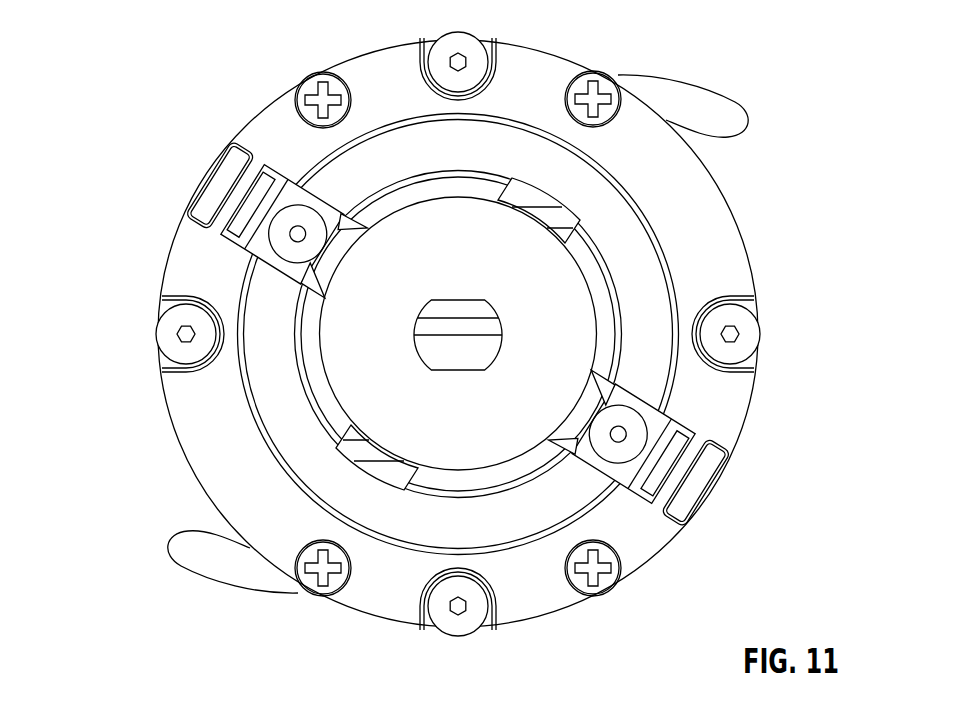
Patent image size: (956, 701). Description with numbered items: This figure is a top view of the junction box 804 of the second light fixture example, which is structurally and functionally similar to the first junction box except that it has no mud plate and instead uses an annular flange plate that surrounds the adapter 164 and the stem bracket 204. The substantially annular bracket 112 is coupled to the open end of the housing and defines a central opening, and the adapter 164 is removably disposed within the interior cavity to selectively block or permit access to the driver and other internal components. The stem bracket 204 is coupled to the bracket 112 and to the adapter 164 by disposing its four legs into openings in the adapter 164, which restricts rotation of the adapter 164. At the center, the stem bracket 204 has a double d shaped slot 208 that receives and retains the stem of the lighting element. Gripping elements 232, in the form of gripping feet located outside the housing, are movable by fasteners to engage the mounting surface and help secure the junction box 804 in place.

The junction box 804 is at (147, 37).
The bracket 112 is at (725, 410).
The adapter 164 is at (650, 305).
The stem bracket 204 is at (562, 287).
The slot 208 is at (458, 384).
The gripping element 232 is at (703, 82).